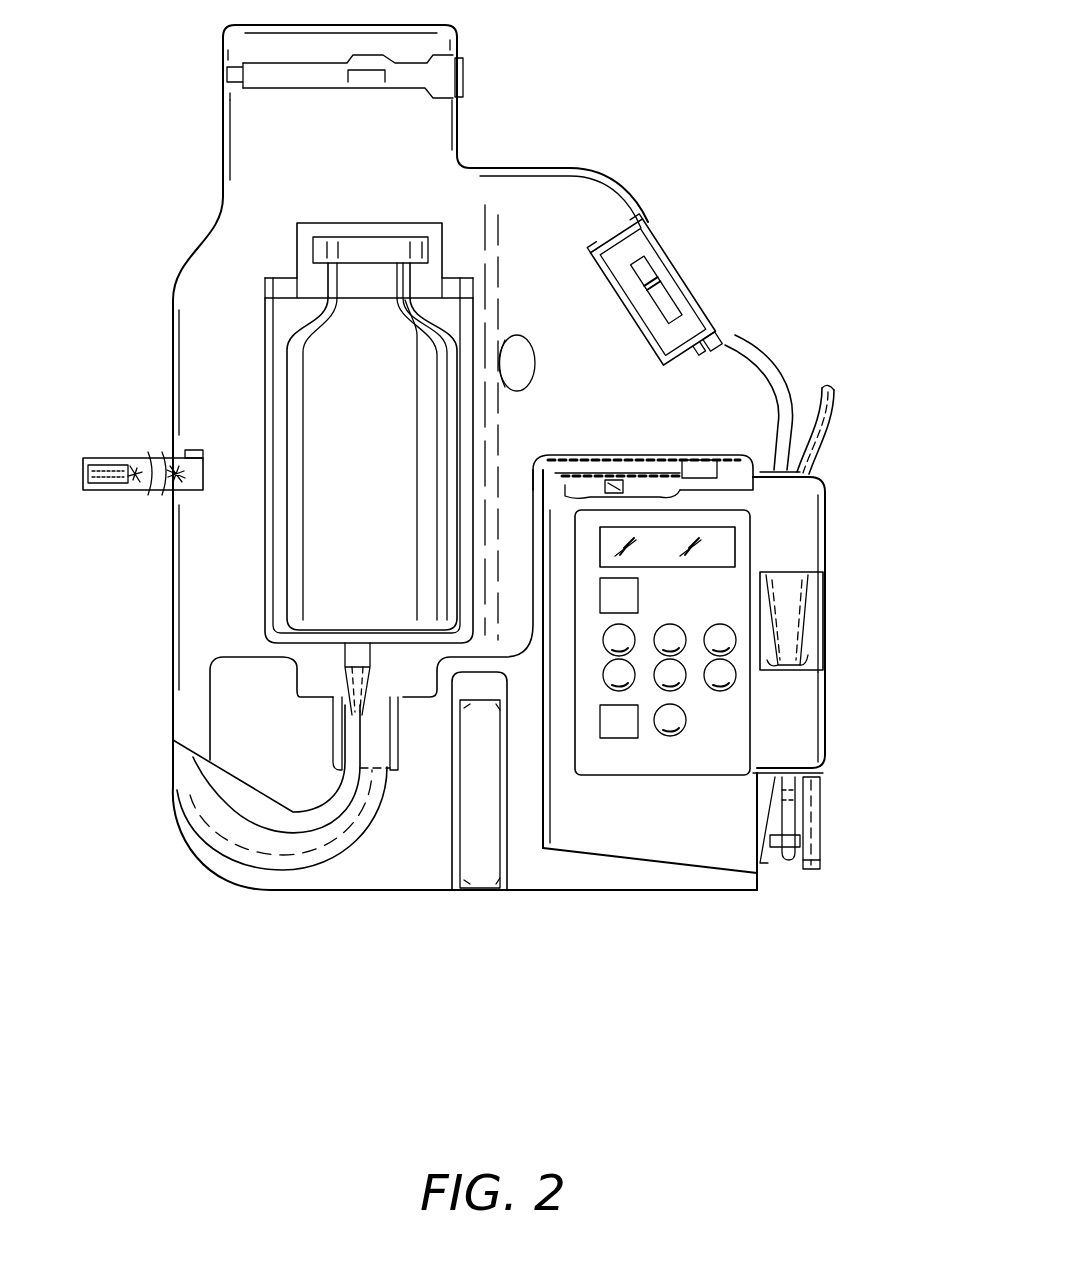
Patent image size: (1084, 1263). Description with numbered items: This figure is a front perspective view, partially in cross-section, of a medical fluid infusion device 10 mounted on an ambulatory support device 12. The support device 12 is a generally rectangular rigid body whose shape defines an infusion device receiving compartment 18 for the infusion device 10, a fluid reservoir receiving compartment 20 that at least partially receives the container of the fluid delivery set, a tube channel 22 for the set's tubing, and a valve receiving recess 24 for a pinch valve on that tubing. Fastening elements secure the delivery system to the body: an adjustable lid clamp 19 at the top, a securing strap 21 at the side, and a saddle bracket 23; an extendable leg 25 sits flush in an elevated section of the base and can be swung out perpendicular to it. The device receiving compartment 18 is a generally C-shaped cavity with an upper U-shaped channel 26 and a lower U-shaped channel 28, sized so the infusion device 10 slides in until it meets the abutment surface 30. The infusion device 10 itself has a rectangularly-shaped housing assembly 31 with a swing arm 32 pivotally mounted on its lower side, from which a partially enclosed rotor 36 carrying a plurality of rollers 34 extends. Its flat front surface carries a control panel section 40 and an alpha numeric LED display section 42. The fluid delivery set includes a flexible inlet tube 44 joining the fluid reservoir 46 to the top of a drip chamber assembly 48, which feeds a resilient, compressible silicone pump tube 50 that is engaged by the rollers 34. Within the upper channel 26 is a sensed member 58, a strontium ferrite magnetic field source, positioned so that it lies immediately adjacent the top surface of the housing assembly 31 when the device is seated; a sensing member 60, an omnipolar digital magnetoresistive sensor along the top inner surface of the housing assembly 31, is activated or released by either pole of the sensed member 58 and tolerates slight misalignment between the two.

The fluid infusion device 10 is at (834, 479).
The support device 12 is at (565, 215).
The infusion device receiving compartment 18 is at (672, 856).
The adjustable lid clamp 19 is at (258, 73).
The fluid reservoir receiving compartment 20 is at (283, 415).
The securing strap 21 is at (135, 483).
The tube channel 22 is at (642, 234).
The saddle bracket 23 is at (268, 280).
The valve receiving recess 24 is at (720, 333).
The extendable leg 25 is at (465, 838).
The upper U-shaped channel 26 is at (745, 452).
The lower U-shaped channel 28 is at (540, 870).
The abutment surface 30 is at (547, 793).
The housing assembly 31 is at (795, 530).
The swing arm 32 is at (818, 662).
The rollers 34 is at (787, 857).
The rotor 36 is at (820, 850).
The control panel section 40 is at (730, 740).
The alpha numeric LED display section 42 is at (718, 553).
The inlet tube 44 is at (800, 448).
The fluid reservoir 46 is at (380, 476).
The drip chamber assembly 48 is at (785, 618).
The pump tube 50 is at (793, 865).
The sensed member 58 is at (597, 457).
The sensing member 60 is at (633, 477).